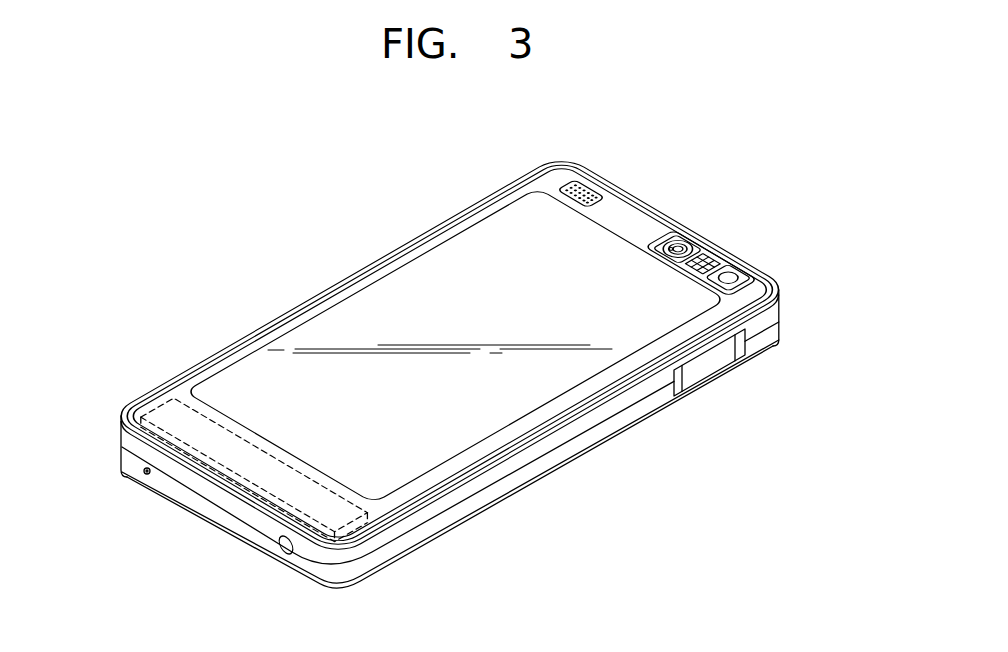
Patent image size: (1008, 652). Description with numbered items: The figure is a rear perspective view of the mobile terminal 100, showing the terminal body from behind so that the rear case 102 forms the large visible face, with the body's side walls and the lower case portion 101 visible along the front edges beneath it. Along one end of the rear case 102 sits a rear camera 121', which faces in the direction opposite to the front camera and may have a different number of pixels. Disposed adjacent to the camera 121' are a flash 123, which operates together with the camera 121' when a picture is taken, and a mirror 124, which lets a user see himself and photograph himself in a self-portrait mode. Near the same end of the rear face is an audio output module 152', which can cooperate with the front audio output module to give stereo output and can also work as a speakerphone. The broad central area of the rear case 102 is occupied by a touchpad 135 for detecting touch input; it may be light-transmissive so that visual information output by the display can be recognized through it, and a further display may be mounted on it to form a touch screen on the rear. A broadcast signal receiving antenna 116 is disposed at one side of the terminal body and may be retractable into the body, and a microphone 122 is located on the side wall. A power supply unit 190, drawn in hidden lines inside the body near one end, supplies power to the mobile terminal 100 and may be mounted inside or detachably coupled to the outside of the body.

The mobile terminal 100 is at (404, 206).
The rear case 101 is at (773, 333).
The rear case 102 is at (773, 313).
The broadcast signal receiving antenna 116 is at (281, 553).
The camera 121' is at (705, 241).
The microphone 122 is at (143, 475).
The flash 123 is at (705, 260).
The mirror 124 is at (730, 278).
The touchpad 135 is at (372, 303).
The audio output module 152' is at (621, 174).
The power supply unit 190 is at (152, 410).